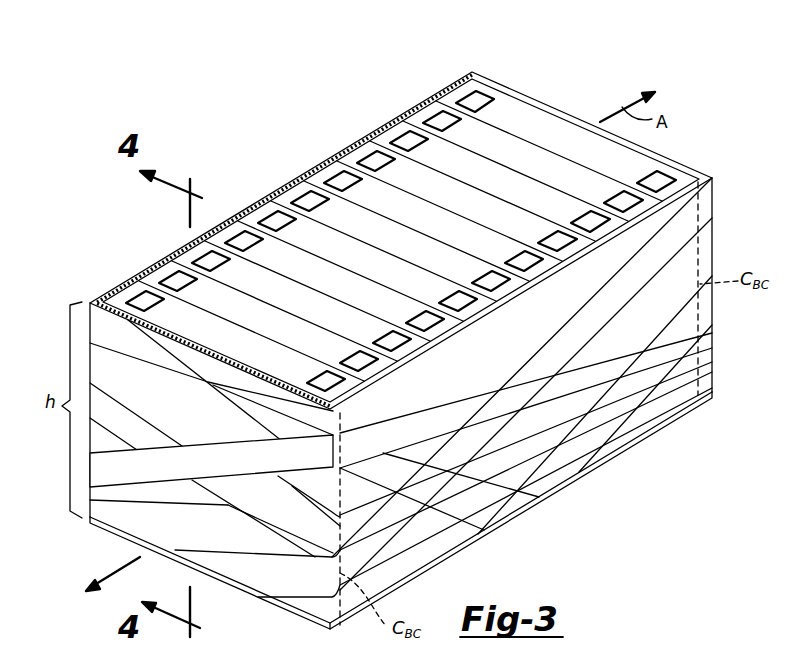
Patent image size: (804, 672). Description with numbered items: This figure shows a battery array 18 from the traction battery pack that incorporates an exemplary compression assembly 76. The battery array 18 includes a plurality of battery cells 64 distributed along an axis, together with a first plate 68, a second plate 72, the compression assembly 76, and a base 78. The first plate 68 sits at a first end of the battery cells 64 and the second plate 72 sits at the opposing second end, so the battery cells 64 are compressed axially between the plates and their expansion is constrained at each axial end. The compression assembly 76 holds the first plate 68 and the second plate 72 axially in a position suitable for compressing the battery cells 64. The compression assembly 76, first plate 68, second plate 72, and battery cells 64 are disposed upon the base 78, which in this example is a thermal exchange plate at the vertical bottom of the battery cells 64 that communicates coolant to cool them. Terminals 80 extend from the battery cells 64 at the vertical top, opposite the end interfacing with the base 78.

The battery array 18 is at (557, 78).
The second plate 72 is at (478, 84).
The battery cells 64 is at (557, 143).
The terminals 80 is at (305, 203).
The first plate 68 is at (100, 302).
The compression assembly 76 is at (683, 329).
The base 78 is at (638, 437).